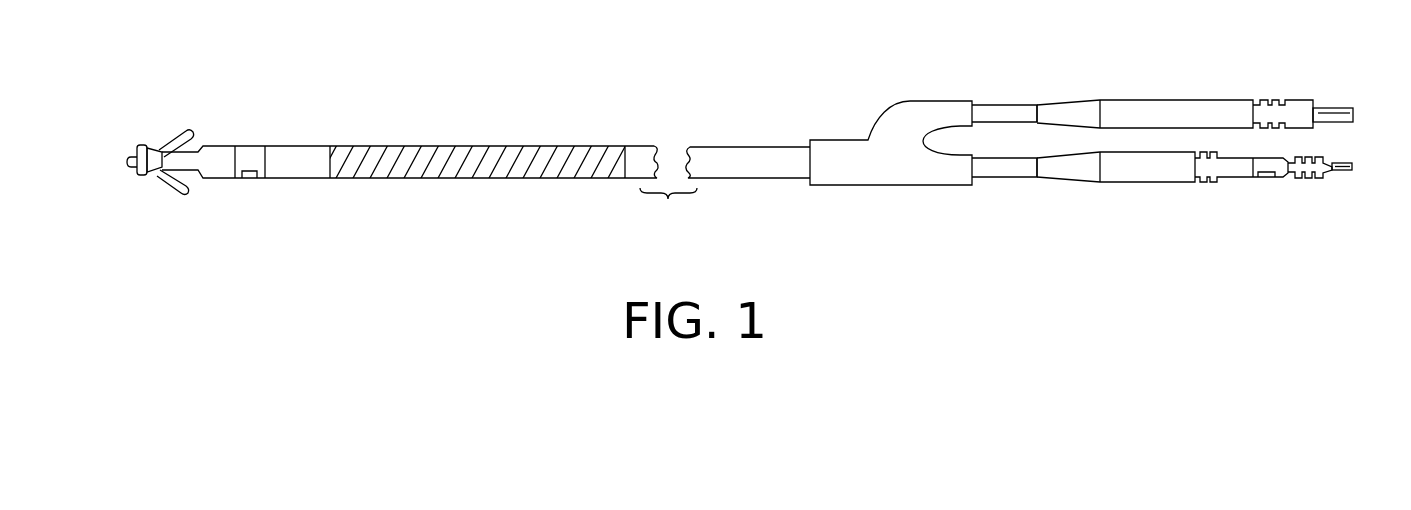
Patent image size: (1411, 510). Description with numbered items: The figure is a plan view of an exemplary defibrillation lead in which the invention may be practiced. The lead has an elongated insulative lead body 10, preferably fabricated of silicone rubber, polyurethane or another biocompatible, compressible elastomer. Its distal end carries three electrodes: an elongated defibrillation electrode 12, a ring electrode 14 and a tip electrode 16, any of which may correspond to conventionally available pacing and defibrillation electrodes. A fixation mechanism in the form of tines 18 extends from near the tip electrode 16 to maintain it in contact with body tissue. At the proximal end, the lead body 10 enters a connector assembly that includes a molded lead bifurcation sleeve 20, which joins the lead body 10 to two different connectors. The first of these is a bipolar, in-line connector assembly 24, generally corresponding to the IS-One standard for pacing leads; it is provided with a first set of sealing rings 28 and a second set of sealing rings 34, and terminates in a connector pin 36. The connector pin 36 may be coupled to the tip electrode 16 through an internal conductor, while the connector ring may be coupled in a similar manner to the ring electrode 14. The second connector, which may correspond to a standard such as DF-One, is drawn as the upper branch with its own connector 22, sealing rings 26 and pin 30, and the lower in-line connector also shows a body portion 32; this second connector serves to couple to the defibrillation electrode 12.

The lead body 10 is at (640, 155).
The defibrillation electrode 12 is at (406, 146).
The ring electrode 14 is at (247, 150).
The tip electrode 16 is at (137, 152).
The tines 18 is at (176, 131).
The lead bifurcation sleeve 20 is at (917, 108).
The upper connector 22 is at (1142, 108).
The bipolar in-line connector assembly 24 is at (1113, 182).
The upper connector rings 26 is at (1270, 101).
The first set of sealing rings 28 is at (1208, 183).
The upper connector pin 30 is at (1335, 108).
The lower connector body 32 is at (1267, 178).
The second set of sealing rings 34 is at (1303, 183).
The connector pin 36 is at (1342, 172).